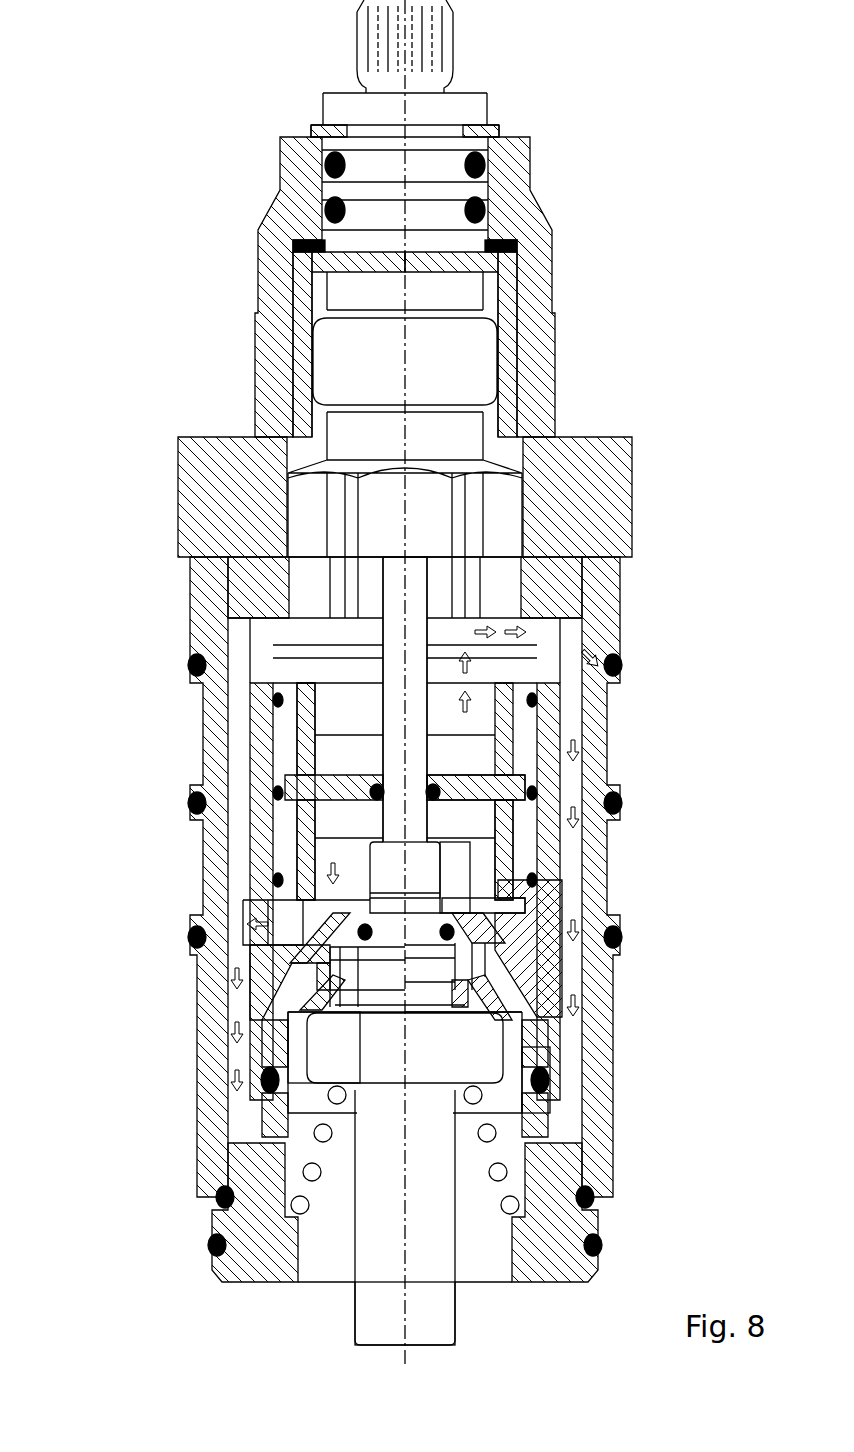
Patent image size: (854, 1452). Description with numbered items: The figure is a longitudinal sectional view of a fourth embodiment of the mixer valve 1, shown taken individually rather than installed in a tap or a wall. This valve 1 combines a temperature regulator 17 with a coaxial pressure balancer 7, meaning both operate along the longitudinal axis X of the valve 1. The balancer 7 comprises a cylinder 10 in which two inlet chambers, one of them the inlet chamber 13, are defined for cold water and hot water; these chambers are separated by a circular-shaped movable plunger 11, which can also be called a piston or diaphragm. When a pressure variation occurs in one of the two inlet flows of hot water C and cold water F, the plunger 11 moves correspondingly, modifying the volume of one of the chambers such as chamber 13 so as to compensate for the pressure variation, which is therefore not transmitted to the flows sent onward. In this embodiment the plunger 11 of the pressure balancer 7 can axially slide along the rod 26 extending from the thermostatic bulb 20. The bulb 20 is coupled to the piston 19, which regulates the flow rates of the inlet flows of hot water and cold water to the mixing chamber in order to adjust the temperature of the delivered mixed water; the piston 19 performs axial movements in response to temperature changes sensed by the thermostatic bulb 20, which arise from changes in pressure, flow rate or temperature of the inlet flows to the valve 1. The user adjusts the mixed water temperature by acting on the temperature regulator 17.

The mixer valve 1 is at (620, 346).
The rod 26 is at (415, 590).
The balancer 7 is at (300, 750).
The cylinder 10 is at (525, 772).
The plunger 11 is at (488, 836).
The inlet chamber 13 is at (494, 911).
The temperature regulator 17 is at (325, 1037).
The piston 19 is at (543, 1140).
The thermostatic bulb 20 is at (375, 1315).
The hot water C is at (122, 852).
The cold water F is at (672, 739).
The longitudinal axis X is at (405, 1367).